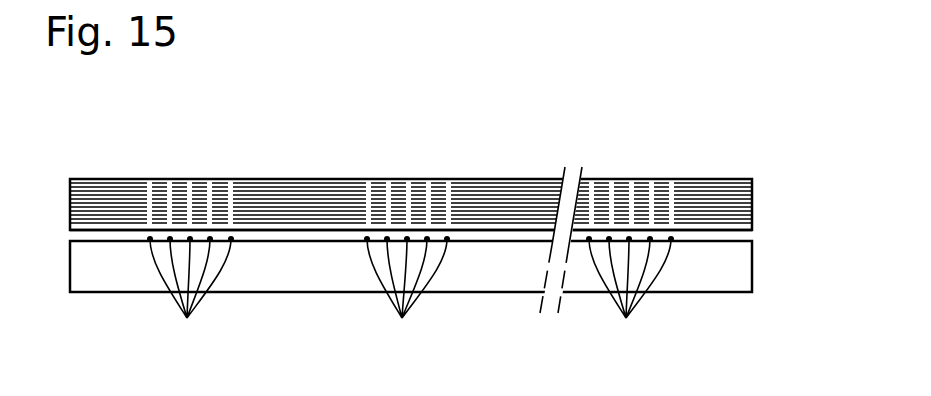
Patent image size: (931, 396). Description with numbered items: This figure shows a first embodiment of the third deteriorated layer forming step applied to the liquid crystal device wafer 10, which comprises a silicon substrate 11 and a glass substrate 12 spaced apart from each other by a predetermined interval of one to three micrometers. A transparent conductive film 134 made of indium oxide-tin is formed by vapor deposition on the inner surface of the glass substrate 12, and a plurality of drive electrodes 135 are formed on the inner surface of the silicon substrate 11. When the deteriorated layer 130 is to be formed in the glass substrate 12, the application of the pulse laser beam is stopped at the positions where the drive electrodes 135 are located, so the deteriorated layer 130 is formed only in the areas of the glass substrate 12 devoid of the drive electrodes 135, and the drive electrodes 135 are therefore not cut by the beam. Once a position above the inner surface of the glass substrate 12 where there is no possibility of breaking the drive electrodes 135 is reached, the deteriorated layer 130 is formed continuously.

The liquid crystal device wafer 10 is at (365, 152).
The silicon substrate 11 is at (313, 298).
The glass substrate 12 is at (285, 176).
The deteriorated layer 130 is at (200, 185).
The transparent conductive film 134 is at (498, 231).
The drive electrodes 135 is at (410, 298).